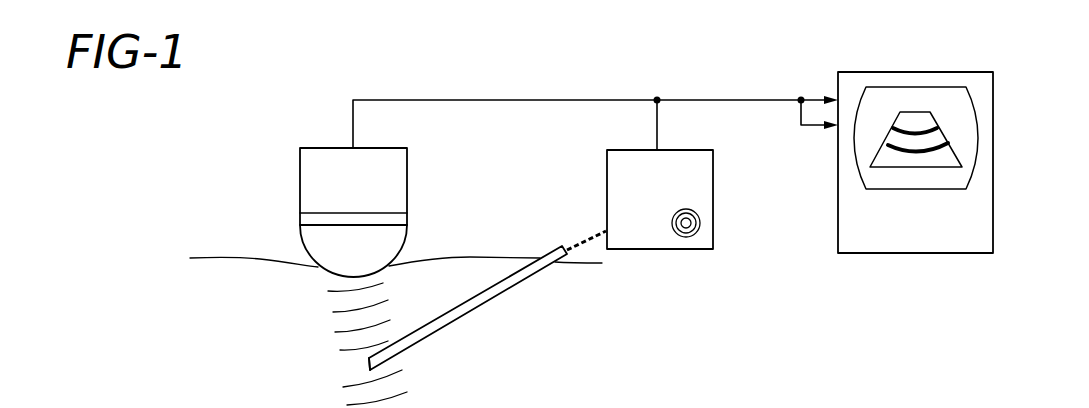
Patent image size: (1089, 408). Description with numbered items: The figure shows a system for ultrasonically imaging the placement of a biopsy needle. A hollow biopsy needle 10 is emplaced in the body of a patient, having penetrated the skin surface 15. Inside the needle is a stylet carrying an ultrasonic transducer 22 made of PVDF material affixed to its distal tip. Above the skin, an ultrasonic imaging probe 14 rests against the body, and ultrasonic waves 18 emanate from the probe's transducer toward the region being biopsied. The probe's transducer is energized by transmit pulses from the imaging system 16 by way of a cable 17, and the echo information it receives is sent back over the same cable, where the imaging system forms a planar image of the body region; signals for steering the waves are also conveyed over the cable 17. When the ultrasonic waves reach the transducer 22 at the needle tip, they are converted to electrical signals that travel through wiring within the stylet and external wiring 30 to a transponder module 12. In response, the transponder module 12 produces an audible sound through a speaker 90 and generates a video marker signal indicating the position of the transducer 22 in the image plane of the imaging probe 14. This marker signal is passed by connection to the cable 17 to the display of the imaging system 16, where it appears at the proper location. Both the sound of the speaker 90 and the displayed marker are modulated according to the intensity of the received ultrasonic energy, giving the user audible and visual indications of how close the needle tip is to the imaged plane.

The hollow biopsy needle 10 is at (498, 297).
The transponder module 12 is at (713, 165).
The ultrasonic imaging probe 14 is at (300, 191).
The skin surface 15 is at (238, 257).
The imaging system 16 is at (993, 99).
The cable 17 is at (541, 100).
The ultrasonic waves 18 is at (312, 301).
The ultrasonic transducer 22 is at (369, 368).
The wiring 30 is at (585, 237).
The speaker 90 is at (700, 221).